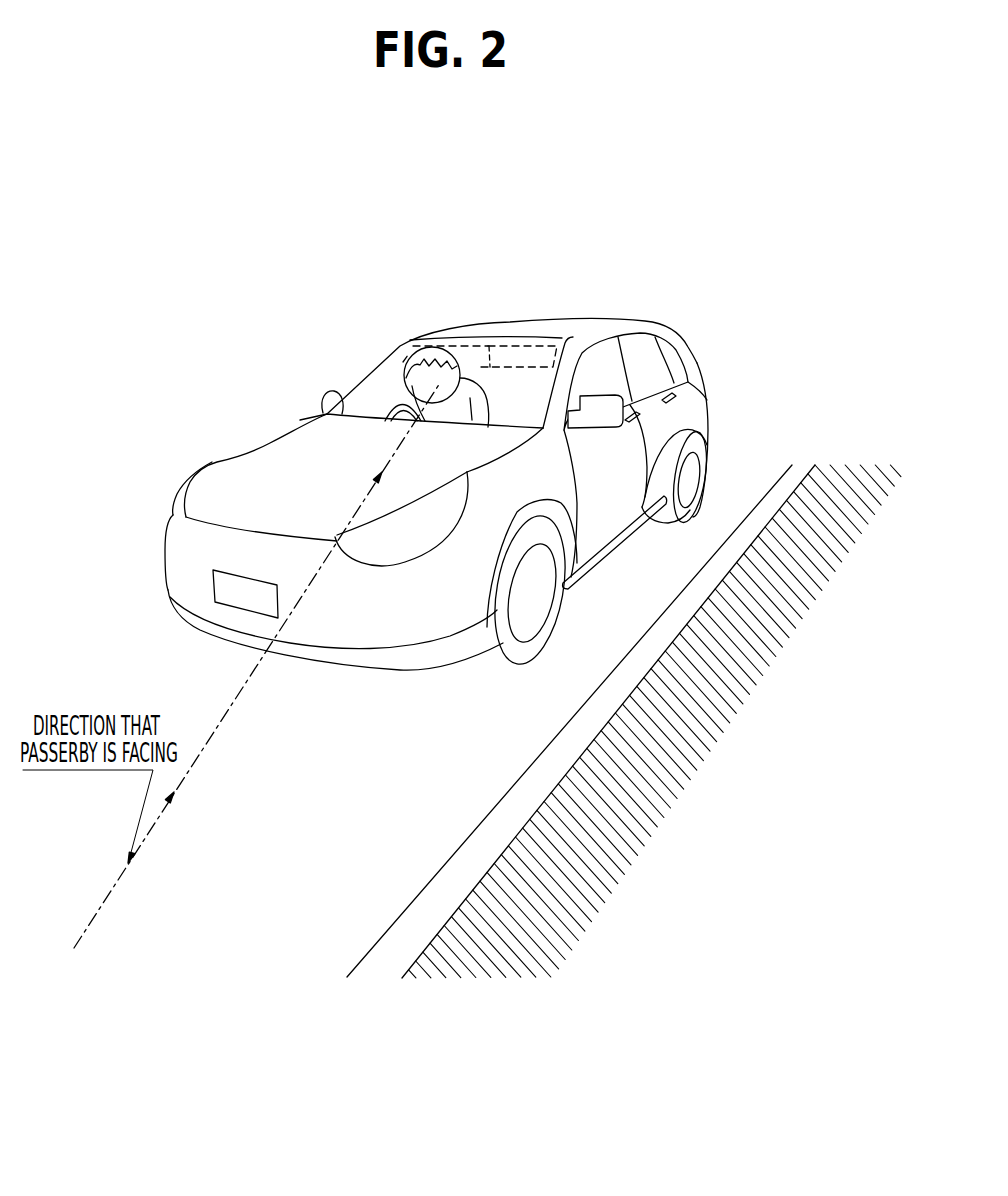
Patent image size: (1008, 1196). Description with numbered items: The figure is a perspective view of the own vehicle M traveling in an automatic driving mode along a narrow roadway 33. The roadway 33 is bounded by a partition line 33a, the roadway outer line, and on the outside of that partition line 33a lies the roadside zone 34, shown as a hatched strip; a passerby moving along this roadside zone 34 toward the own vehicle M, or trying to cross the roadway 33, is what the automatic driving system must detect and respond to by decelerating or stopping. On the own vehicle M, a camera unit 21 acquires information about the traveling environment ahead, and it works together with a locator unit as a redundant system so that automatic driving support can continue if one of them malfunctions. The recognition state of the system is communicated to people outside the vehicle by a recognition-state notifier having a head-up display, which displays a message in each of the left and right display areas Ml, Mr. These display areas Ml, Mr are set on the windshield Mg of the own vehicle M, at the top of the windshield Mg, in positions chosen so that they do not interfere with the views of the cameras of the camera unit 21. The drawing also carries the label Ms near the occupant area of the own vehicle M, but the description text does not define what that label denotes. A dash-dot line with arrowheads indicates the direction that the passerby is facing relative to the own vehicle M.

The own vehicle M is at (660, 312).
The steering wheel Ms is at (402, 397).
The right display area Mr is at (438, 338).
The left display area Ml is at (529, 338).
The windshield Mg is at (542, 405).
The camera unit 21 is at (483, 338).
The roadway 33 is at (383, 776).
The partition line 33a is at (408, 905).
The roadside zone 34 is at (530, 963).